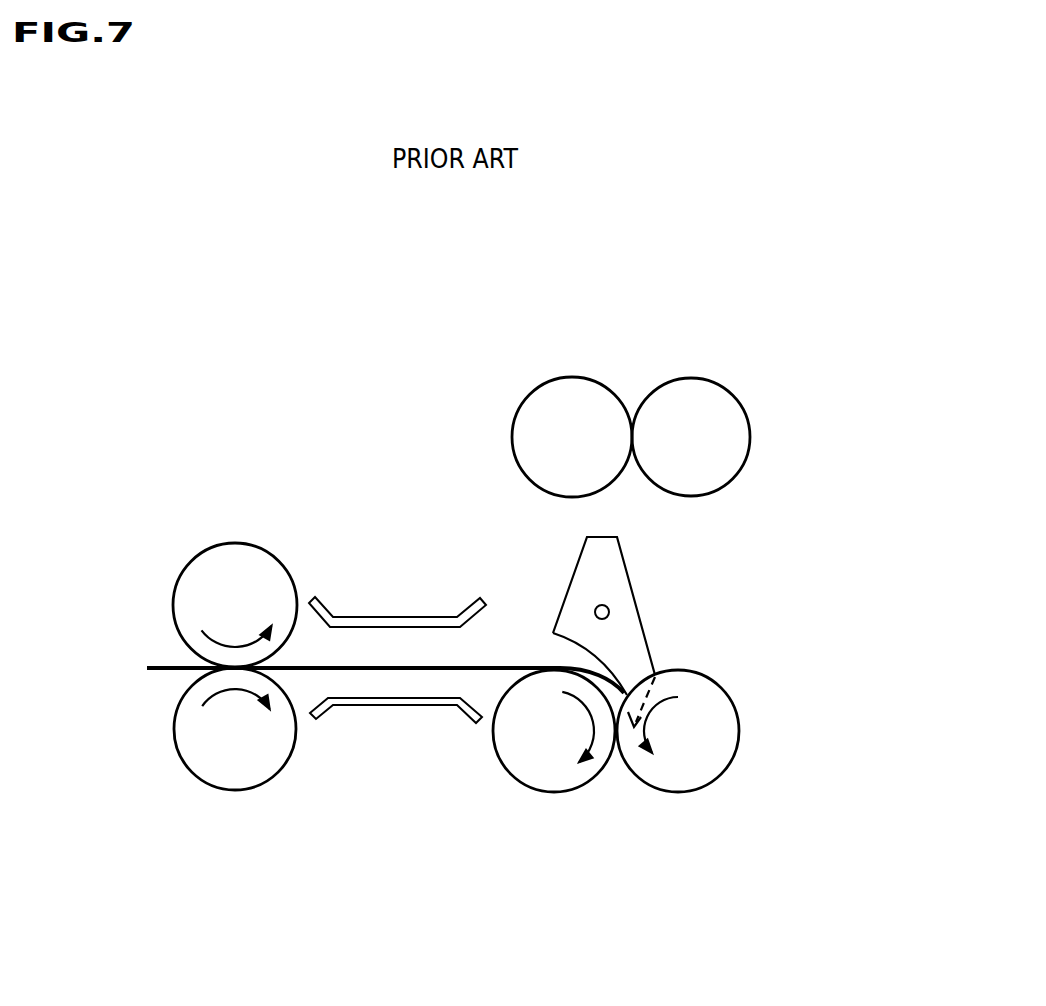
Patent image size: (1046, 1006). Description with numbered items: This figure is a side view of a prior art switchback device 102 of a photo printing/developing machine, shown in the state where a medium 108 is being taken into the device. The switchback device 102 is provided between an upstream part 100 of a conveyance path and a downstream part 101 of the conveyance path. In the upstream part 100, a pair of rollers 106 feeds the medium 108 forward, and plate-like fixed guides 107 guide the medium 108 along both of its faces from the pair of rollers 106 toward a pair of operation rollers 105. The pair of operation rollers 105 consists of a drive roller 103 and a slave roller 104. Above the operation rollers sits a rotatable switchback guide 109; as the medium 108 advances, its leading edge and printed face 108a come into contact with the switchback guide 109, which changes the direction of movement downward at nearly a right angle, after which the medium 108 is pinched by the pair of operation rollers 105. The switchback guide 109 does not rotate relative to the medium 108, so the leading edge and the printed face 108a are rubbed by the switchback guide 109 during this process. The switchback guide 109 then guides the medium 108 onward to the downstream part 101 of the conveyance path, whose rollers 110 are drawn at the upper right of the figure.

The upstream part of a conveyance path 100 is at (143, 602).
The downstream part of the conveyance path 101 is at (703, 353).
The switchback device 102 is at (792, 607).
The drive roller 103 is at (552, 780).
The slave roller 104 is at (678, 780).
The pair of operation rollers 105 is at (682, 883).
The pair of rollers 106 is at (185, 617).
The fixed guides 107 is at (372, 617).
The medium 108 is at (338, 665).
The printed face 108a is at (492, 668).
The switchback guide 109 is at (613, 582).
The conveying rollers 110 is at (680, 398).